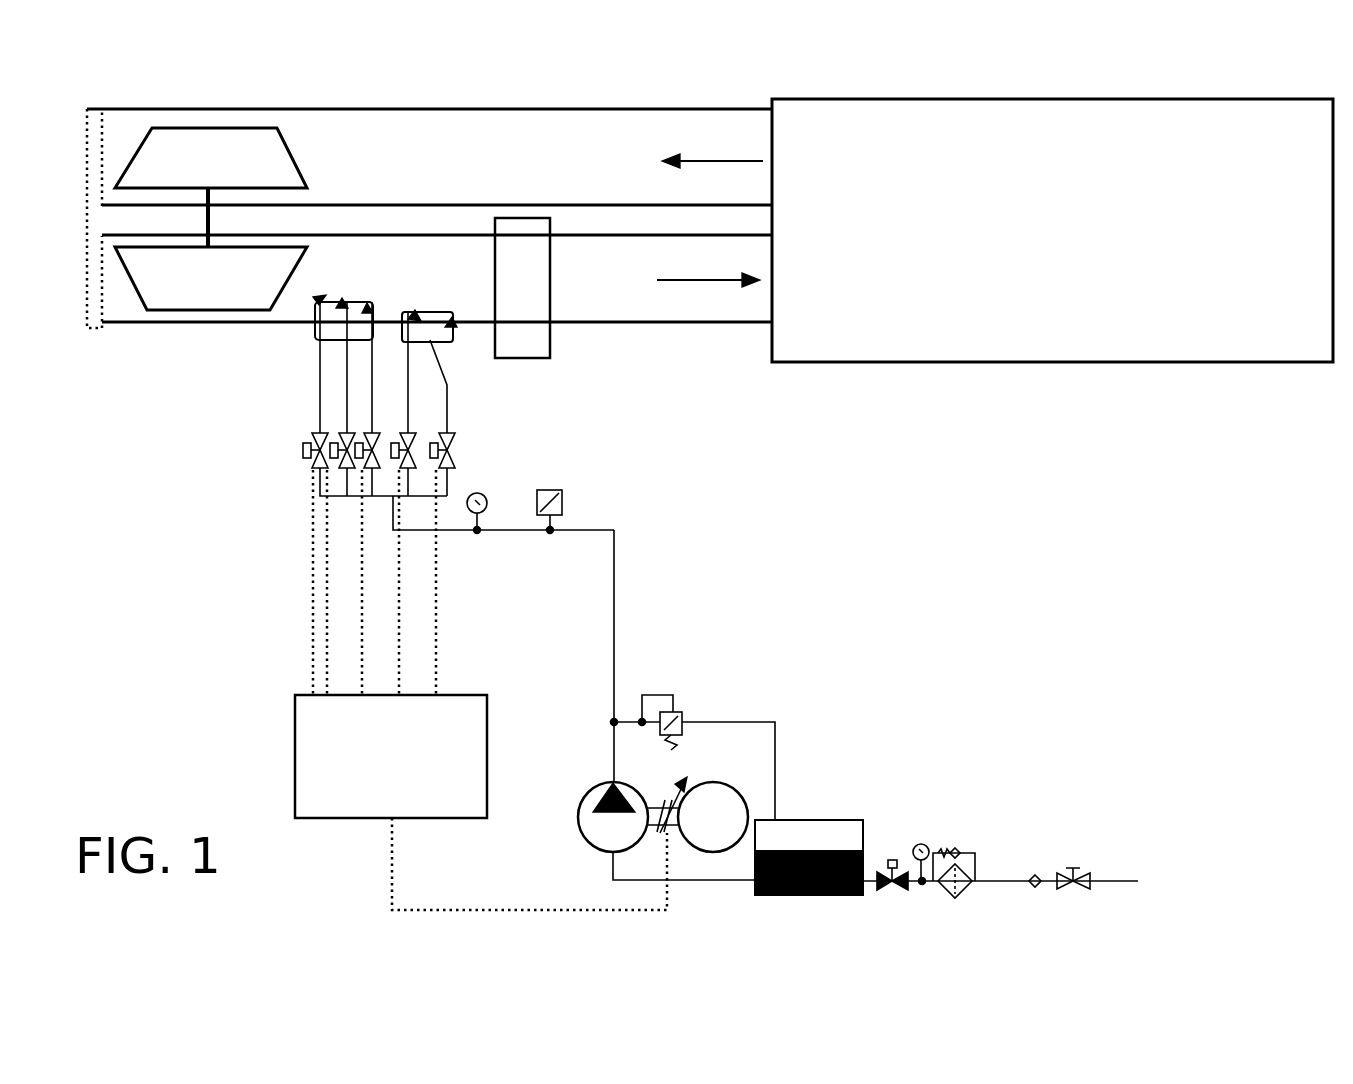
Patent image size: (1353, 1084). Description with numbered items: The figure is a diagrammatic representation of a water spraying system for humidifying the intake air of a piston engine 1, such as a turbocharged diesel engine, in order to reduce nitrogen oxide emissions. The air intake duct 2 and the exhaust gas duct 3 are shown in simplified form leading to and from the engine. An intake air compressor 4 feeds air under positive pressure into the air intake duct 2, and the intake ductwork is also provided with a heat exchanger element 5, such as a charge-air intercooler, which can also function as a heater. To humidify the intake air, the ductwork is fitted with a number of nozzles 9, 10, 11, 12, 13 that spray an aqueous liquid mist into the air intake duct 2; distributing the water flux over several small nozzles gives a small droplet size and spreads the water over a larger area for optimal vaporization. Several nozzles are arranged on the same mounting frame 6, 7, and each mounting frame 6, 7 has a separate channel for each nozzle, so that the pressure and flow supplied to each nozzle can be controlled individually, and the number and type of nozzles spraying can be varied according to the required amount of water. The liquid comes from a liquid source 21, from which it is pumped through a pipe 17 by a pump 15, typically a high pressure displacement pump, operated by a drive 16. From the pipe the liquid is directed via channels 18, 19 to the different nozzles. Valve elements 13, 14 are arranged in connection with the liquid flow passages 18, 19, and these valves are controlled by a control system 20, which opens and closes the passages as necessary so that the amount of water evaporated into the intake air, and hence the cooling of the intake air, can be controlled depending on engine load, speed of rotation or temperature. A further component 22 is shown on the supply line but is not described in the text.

The piston engine 1 is at (903, 352).
The air intake duct 2 is at (652, 313).
The exhaust gas duct 3 is at (653, 128).
The intake air compressor 4 is at (195, 295).
The heat exchanger element 5 is at (535, 310).
The mounting frame 6 is at (352, 337).
The mounting frame 7 is at (447, 372).
The nozzle 9 is at (313, 297).
The nozzle 10 is at (342, 298).
The nozzle 11 is at (367, 303).
The nozzle 12 is at (415, 310).
The nozzle 13 is at (452, 317).
The valve element 14 is at (310, 438).
The pump 15 is at (590, 833).
The drive 16 is at (737, 812).
The pipe 17 is at (617, 595).
The channel 18 is at (320, 407).
The channel 19 is at (447, 413).
The control system 20 is at (322, 735).
The liquid source 21 is at (847, 897).
The filter 22 is at (975, 855).